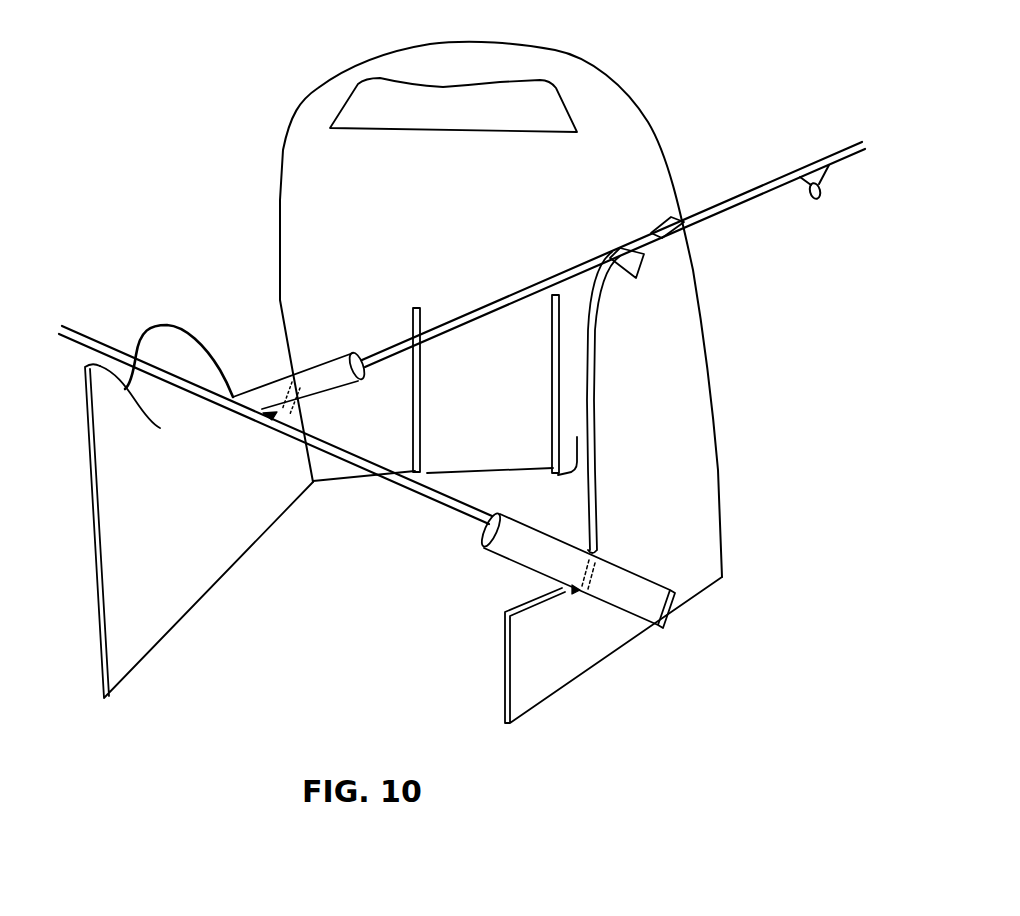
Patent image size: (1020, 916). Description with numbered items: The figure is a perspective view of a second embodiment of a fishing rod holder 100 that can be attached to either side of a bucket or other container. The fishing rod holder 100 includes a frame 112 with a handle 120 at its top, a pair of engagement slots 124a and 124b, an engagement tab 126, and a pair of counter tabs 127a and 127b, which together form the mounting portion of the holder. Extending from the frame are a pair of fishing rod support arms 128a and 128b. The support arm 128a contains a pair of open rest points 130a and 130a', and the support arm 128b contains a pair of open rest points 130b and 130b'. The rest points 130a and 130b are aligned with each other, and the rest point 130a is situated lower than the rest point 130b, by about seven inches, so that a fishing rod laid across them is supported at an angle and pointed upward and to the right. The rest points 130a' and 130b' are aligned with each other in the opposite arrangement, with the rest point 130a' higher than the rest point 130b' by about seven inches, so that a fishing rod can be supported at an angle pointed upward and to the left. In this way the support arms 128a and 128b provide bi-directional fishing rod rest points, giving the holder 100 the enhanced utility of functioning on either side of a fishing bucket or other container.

The fishing rod holder 100 is at (247, 107).
The frame 112 is at (657, 157).
The handle 120 is at (500, 57).
The engagement slot 124a is at (413, 312).
The engagement slot 124b is at (555, 313).
The engagement tab 126 is at (498, 411).
The counter tab 127a is at (396, 425).
The counter tab 127b is at (563, 471).
The fishing rod support arm 128a is at (192, 568).
The fishing rod support arm 128b is at (685, 467).
The open rest point 130a is at (495, 281).
The open rest point 130a' is at (155, 415).
The open rest point 130b is at (682, 385).
The open rest point 130b' is at (367, 477).